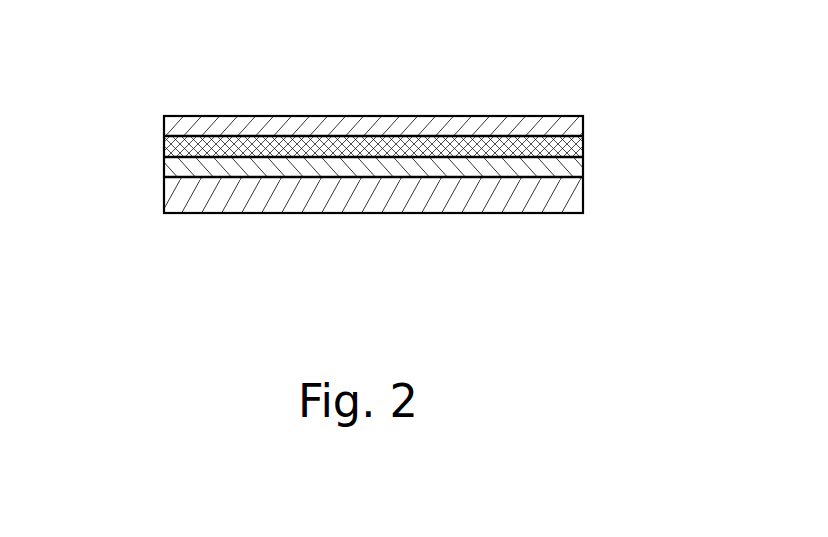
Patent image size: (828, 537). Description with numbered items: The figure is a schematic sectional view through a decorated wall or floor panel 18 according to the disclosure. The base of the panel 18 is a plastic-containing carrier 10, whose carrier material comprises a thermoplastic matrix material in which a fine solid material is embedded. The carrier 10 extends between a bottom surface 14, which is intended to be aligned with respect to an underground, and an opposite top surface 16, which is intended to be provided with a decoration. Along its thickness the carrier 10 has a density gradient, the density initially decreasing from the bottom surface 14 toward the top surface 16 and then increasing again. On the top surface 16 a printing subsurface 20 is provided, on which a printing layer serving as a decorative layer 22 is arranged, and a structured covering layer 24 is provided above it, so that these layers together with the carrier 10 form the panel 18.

The decorated wall or floor panel 18 is at (614, 67).
The structured covering layer 24 is at (576, 127).
The decorative layer 22 is at (173, 147).
The printing subsurface 20 is at (576, 163).
The top surface 16 is at (399, 179).
The plastic-containing carrier 10 is at (576, 200).
The bottom surface 14 is at (453, 213).